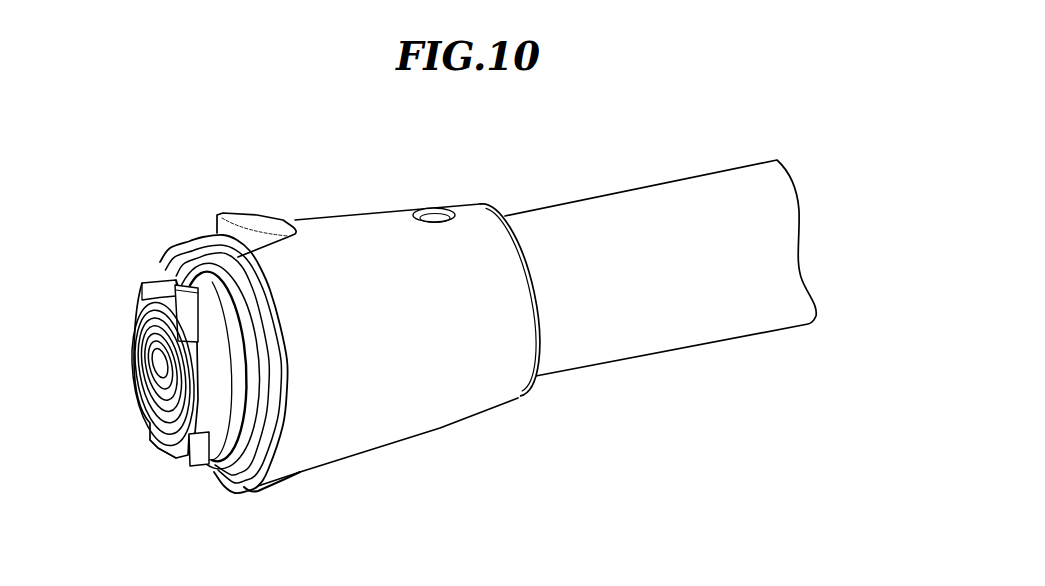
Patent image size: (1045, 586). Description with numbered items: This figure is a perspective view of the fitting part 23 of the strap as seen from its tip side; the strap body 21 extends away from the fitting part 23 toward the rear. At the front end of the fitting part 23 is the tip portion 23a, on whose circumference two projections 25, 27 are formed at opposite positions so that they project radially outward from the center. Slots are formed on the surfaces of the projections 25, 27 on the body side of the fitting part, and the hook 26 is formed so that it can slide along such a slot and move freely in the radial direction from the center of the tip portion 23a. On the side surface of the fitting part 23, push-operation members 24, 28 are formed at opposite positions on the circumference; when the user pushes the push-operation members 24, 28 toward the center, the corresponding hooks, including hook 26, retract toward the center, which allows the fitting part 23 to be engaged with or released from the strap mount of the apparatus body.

The cable / boot 21 is at (632, 360).
The fitting part 23 is at (415, 437).
The tip portion 23a is at (217, 410).
The push-operation member 24 is at (253, 226).
The projection 25 is at (143, 290).
The hook 26 is at (188, 282).
The projection 27 is at (158, 452).
The push-operation member 28 is at (259, 494).